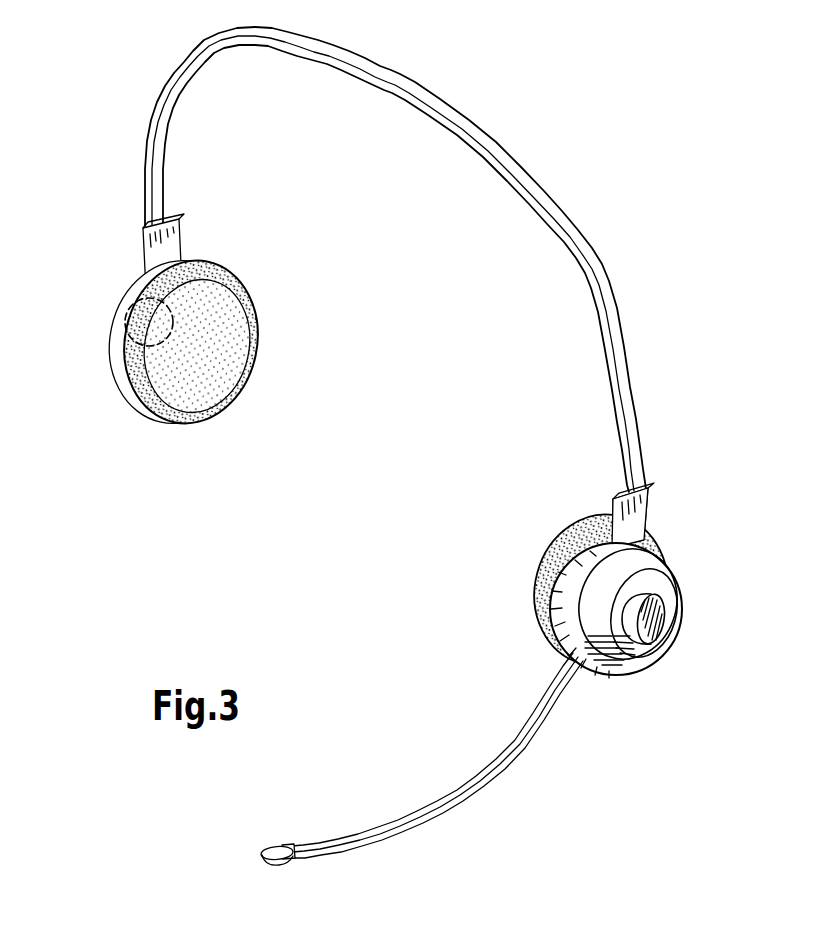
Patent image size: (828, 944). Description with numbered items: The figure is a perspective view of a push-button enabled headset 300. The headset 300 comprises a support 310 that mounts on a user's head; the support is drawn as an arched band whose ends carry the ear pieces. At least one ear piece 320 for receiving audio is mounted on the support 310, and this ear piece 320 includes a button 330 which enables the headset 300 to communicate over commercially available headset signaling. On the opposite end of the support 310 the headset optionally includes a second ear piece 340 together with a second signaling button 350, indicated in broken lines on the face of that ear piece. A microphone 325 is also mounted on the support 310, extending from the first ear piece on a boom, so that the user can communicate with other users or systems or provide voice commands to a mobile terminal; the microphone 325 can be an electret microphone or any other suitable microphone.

The push-button enabled headset 300 is at (577, 140).
The support 310 is at (613, 332).
The ear piece 320 is at (627, 657).
The microphone 325 is at (283, 846).
The button 330 is at (653, 623).
The second ear piece 340 is at (141, 397).
The second signaling button 350 is at (125, 311).